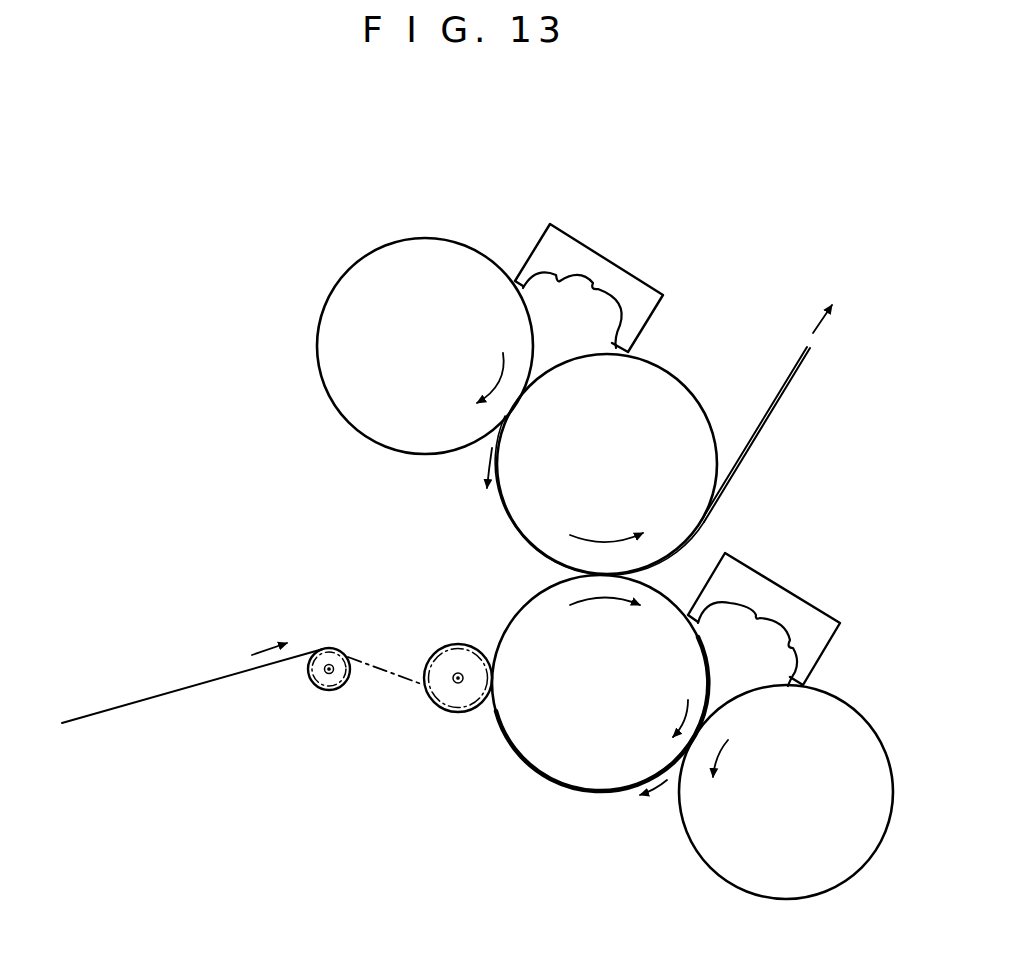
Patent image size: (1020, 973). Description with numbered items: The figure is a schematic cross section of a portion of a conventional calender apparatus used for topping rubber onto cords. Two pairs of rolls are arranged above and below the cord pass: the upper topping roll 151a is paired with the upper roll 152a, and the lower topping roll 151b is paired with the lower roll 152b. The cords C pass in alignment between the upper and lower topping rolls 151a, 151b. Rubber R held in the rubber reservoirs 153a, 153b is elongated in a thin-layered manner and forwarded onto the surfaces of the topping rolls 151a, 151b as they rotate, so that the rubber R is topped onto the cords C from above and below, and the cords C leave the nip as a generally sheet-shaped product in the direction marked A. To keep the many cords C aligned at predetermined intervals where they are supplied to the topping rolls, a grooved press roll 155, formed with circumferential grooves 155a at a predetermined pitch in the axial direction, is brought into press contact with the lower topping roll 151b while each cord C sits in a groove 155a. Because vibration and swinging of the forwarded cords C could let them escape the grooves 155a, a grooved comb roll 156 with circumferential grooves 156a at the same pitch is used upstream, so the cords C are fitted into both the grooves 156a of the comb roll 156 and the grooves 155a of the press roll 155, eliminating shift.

The upper topping roll 151a is at (675, 407).
The lower topping roll 151b is at (597, 765).
The upper roll 152a is at (436, 253).
The lower roll 152b is at (727, 847).
The upper rubber reservoir 153a is at (592, 280).
The lower rubber reservoir 153b is at (780, 618).
The grooved press roll 155 is at (450, 692).
The circumferential grooves of the press roll 155a is at (437, 652).
The grooved comb roll 156 is at (337, 678).
The circumferential grooves of the comb roll 156a is at (330, 684).
The rubber R is at (608, 310).
The sheet discharge direction A is at (783, 387).
The cords C is at (137, 705).